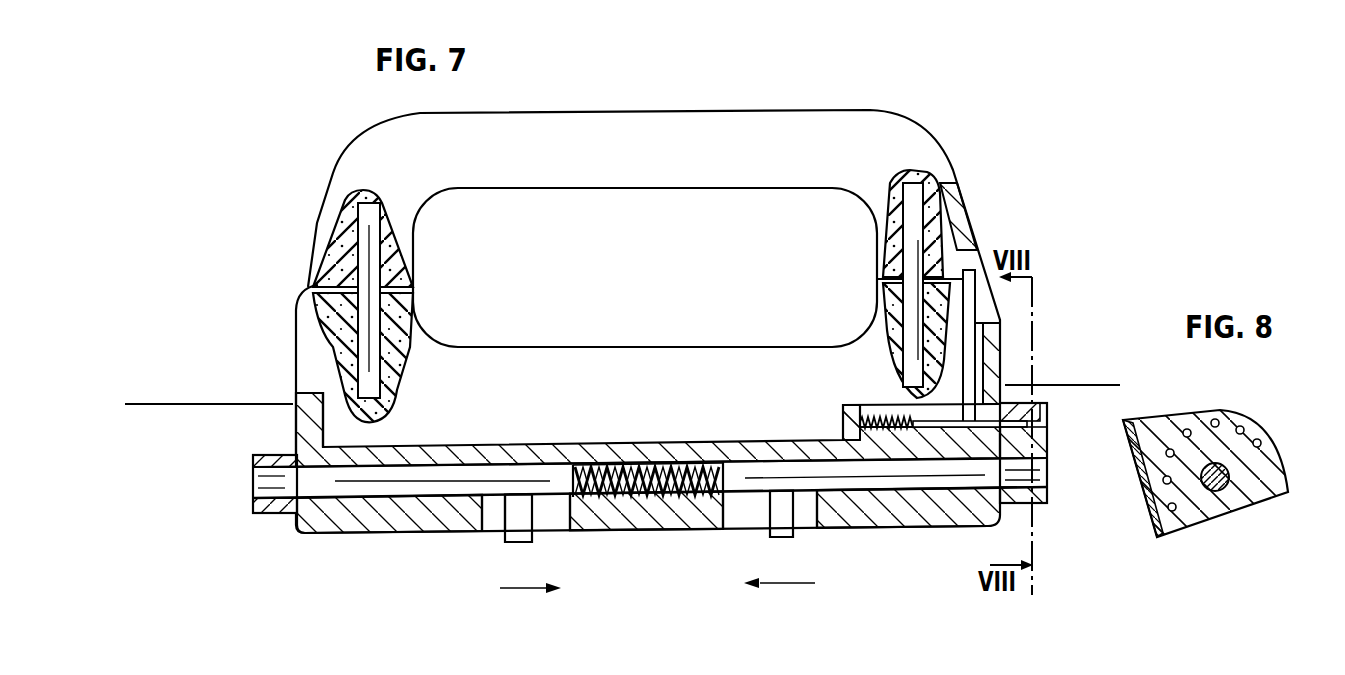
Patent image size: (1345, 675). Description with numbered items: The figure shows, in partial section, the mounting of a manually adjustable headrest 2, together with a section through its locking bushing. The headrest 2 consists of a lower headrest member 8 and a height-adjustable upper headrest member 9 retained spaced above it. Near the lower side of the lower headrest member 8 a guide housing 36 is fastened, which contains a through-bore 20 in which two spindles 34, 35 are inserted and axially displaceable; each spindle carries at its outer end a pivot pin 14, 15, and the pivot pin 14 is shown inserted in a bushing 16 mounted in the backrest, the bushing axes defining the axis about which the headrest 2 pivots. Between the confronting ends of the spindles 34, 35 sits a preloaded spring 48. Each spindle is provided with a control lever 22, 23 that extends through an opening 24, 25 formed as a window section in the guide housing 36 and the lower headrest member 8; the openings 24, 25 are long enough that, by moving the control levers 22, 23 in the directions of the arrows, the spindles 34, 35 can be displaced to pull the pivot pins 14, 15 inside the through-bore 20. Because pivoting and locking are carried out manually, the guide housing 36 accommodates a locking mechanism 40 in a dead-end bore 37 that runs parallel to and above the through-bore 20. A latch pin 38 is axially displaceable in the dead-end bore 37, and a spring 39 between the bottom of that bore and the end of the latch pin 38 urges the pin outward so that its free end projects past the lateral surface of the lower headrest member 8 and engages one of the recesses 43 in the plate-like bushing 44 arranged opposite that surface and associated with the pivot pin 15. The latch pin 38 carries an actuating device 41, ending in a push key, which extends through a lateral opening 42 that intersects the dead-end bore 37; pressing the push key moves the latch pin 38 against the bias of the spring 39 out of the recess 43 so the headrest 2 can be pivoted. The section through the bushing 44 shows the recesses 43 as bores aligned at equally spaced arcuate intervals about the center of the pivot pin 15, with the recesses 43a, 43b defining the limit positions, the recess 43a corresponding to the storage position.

In FIG. 7, the headrest 2 is at (876, 140).
In FIG. 7, the upper headrest member 9 is at (637, 188).
In FIG. 7, the lower headrest member 8 is at (305, 350).
In FIG. 7, the pivot pin 14 is at (265, 486).
In FIG. 7, the bushing 16 is at (268, 515).
In FIG. 7, the spindle 34 is at (343, 492).
In FIG. 7, the guide housing 36 is at (400, 516).
In FIG. 7, the opening 24 is at (490, 532).
In FIG. 7, the control lever 22 is at (520, 536).
In FIG. 7, the through-bore 20 is at (628, 498).
In FIG. 7, the control lever 23 is at (770, 532).
In FIG. 7, the opening 25 is at (810, 514).
In FIG. 7, the spindle 35 is at (893, 486).
In FIG. 7, the dead-end bore 37 is at (860, 424).
In FIG. 7, the latch pin 38 is at (951, 428).
In FIG. 7, the spring 39 is at (880, 414).
In FIG. 7, the locking mechanism 40 is at (950, 348).
In FIG. 7, the actuating device 41 is at (985, 305).
In FIG. 7, the lateral opening 42 is at (947, 407).
In FIG. 7, the recesses 43 is at (1040, 418).
In FIG. 8, the recesses 43 is at (1217, 420).
In FIG. 8, the recess 43a is at (1172, 512).
In FIG. 8, the recess 43b is at (1261, 440).
In FIG. 7, the bushing 44 is at (1042, 450).
In FIG. 8, the bushing 44 is at (1170, 420).
In FIG. 7, the pivot pin 15 is at (1042, 475).
In FIG. 8, the pivot pin 15 is at (1220, 482).
In FIG. 7, the preloaded spring 48 is at (646, 466).